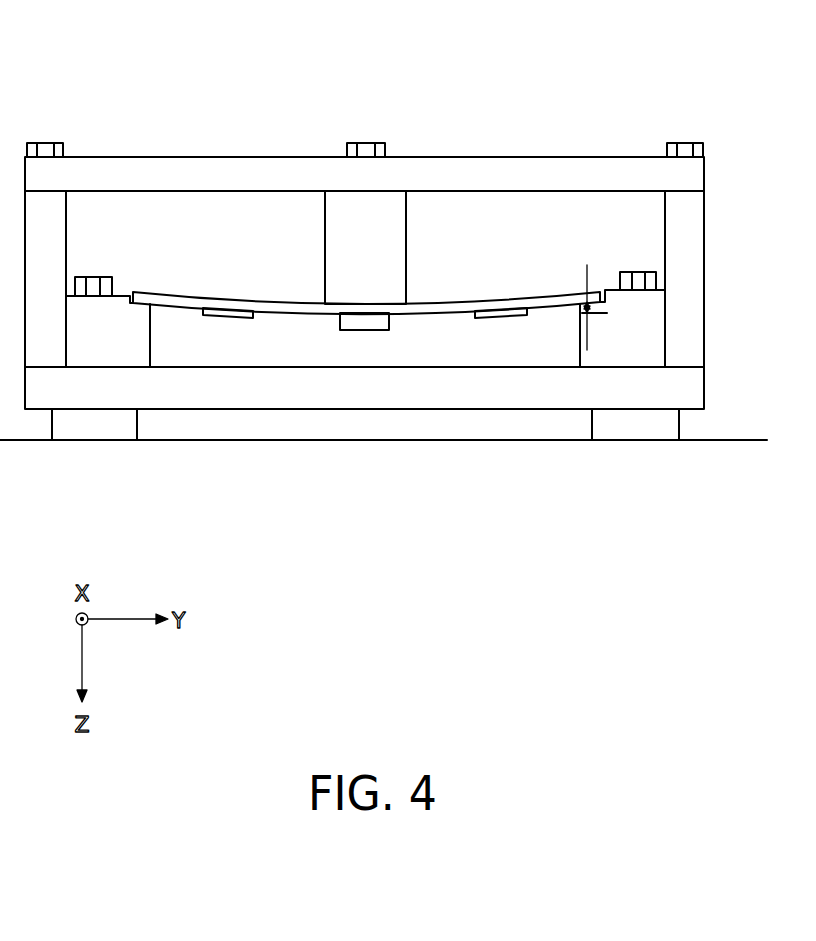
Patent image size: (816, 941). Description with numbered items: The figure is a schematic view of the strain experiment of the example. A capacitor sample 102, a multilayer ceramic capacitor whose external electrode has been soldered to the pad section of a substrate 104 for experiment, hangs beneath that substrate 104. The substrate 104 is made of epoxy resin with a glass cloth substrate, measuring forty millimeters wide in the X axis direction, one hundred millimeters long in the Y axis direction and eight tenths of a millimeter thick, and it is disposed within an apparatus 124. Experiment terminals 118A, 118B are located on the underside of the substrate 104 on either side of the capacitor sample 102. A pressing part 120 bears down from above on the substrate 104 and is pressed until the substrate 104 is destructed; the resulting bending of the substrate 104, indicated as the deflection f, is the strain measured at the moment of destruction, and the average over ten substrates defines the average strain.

The apparatus 124 is at (154, 126).
The substrate 104 is at (225, 279).
The pressing part 120 is at (407, 237).
The experiment terminal 118A is at (215, 318).
The experiment terminal 118B is at (483, 318).
The capacitor sample 102 is at (362, 330).
The deflection amount f is at (580, 318).